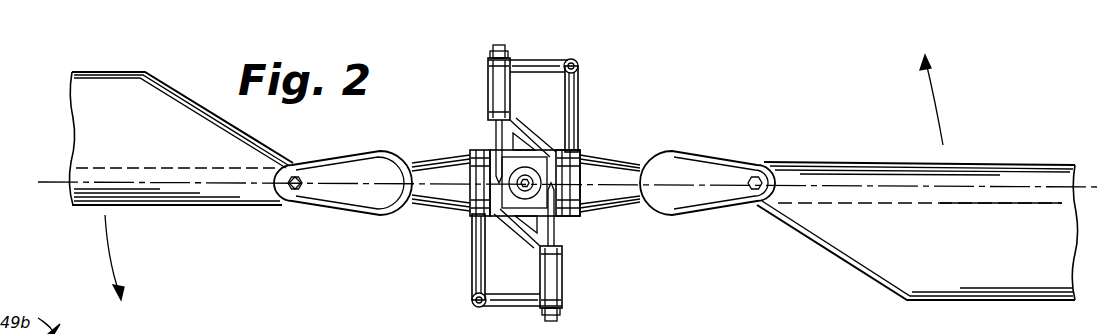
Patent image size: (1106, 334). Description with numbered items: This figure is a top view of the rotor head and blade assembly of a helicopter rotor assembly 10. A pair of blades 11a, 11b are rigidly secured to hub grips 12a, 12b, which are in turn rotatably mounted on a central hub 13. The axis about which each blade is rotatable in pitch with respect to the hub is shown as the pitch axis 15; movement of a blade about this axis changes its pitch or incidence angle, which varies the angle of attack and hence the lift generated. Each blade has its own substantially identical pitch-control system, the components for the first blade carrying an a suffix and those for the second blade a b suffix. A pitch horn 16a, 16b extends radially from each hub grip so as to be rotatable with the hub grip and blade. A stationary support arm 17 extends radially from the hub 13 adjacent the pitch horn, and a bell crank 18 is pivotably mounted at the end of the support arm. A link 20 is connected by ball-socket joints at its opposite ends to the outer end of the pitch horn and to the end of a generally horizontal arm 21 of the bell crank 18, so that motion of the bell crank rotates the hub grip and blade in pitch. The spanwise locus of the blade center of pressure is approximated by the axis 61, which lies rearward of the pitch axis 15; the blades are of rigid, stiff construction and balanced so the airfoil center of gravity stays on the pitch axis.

The helicopter rotor assembly 10 is at (649, 116).
The blade 11a is at (193, 208).
The blade 11b is at (873, 156).
The hub grip 12a is at (425, 208).
The hub grip 12b is at (638, 162).
The central hub 13 is at (478, 150).
The pitch axis 15 is at (270, 199).
The pitch horn 16a is at (474, 273).
The pitch horn 16b is at (580, 103).
The stationary support arm 17 is at (510, 110).
The bell crank 18 is at (490, 74).
The link 20 is at (584, 66).
The horizontal arm 21 is at (555, 60).
The center-of-pressure axis 61 is at (964, 204).